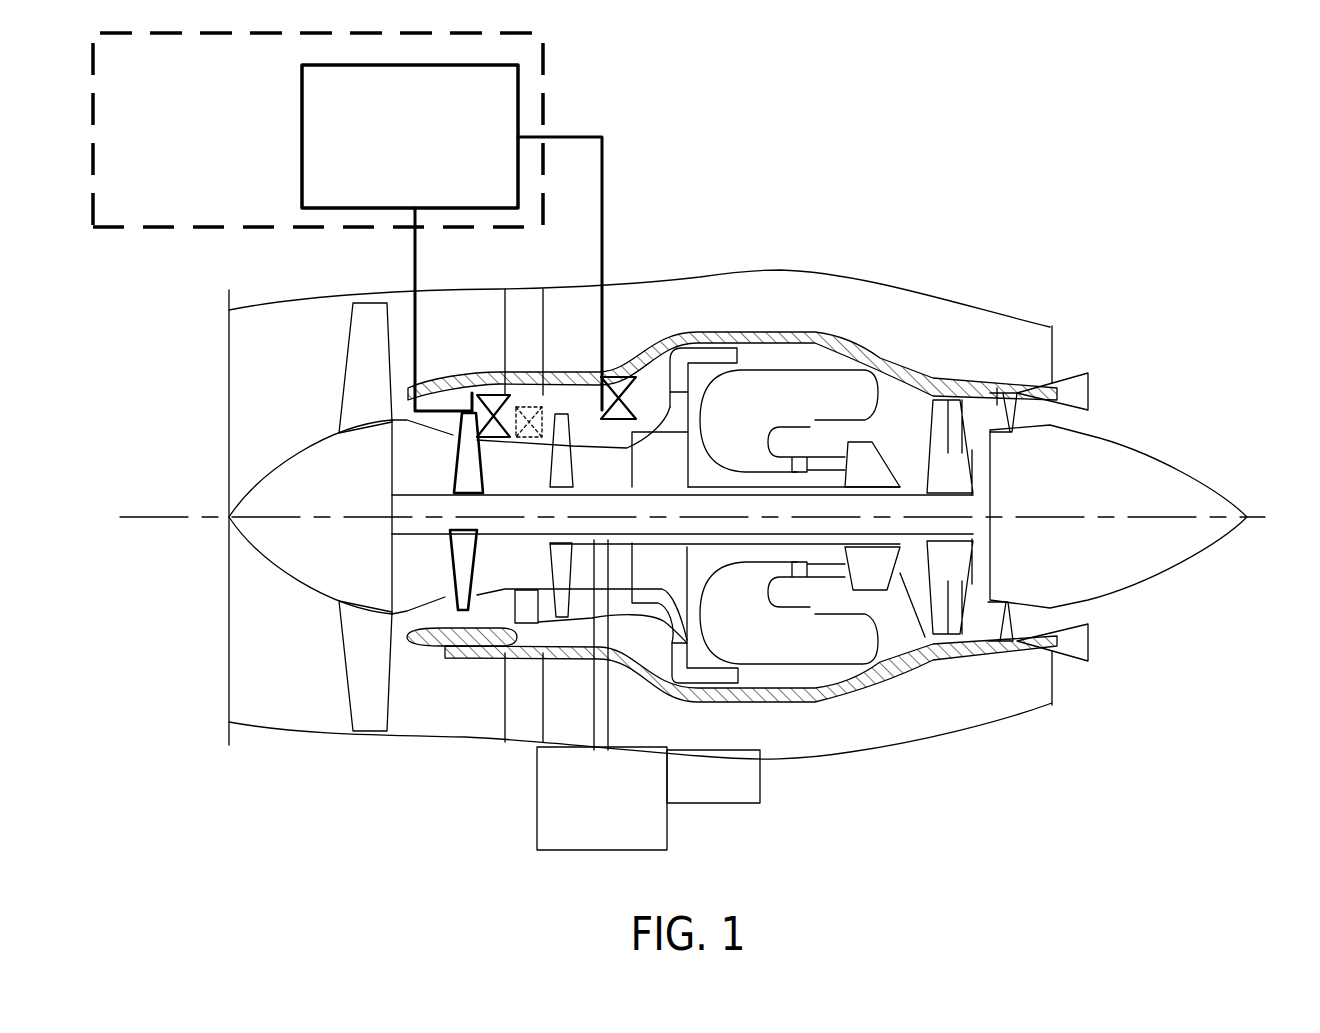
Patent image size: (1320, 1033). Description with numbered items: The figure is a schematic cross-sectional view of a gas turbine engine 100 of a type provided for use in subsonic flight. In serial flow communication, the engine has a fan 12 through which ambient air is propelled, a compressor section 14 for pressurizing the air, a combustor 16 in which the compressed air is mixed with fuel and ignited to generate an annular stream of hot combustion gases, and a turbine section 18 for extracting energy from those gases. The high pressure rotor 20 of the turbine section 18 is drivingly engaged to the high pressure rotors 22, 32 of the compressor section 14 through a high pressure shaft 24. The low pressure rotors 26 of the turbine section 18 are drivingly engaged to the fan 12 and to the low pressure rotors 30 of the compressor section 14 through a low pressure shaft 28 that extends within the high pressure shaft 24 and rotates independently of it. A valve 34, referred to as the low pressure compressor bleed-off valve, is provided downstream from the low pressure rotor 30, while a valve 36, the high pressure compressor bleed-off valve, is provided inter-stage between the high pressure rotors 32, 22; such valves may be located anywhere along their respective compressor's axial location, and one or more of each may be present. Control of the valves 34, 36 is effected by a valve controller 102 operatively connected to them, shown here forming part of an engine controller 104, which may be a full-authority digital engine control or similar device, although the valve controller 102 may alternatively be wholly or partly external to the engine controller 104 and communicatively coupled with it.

The gas turbine engine 100 is at (930, 210).
The fan 12 is at (362, 655).
The compressor section 14 is at (600, 383).
The combustor 16 is at (792, 388).
The turbine section 18 is at (910, 578).
The high pressure rotor 20 is at (880, 448).
The high pressure rotor 22 is at (657, 447).
The high pressure shaft 24 is at (800, 440).
The low pressure rotor 26 is at (935, 400).
The low pressure shaft 28 is at (450, 532).
The low pressure rotor 30 is at (463, 465).
The high pressure rotor 32 is at (562, 438).
The valve 34 is at (493, 395).
The valve 36 is at (620, 376).
The valve controller 102 is at (390, 179).
The engine controller 104 is at (197, 167).